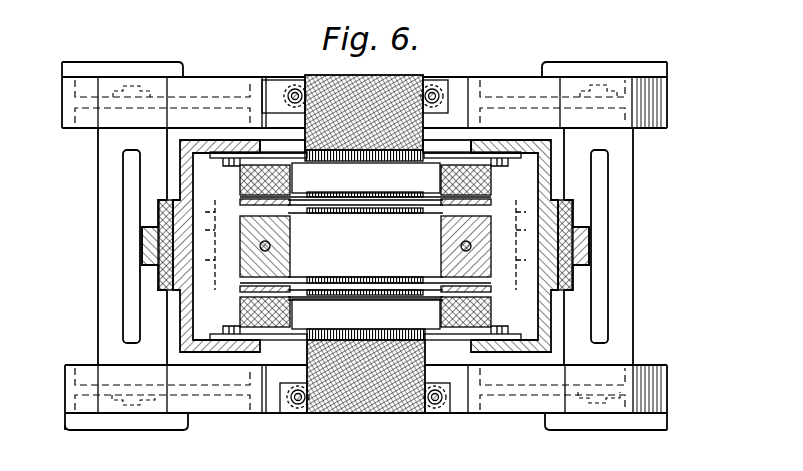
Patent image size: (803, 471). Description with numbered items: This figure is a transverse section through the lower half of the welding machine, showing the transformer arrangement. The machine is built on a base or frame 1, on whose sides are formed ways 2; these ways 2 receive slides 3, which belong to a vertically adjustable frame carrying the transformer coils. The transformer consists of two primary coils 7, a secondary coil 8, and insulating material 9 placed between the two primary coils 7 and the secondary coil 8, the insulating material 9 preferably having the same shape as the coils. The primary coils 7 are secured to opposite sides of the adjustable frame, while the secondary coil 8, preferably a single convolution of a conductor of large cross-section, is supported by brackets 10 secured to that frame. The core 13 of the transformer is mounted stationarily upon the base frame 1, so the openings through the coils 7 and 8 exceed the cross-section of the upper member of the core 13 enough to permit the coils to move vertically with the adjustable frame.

The base or frame 1 is at (218, 90).
The ways 2 is at (130, 253).
The slides 3 is at (153, 238).
The primary coils 7 is at (240, 179).
The secondary coil 8 is at (241, 258).
The insulating material 9 is at (241, 202).
The brackets 10 is at (208, 200).
The core 13 is at (398, 413).